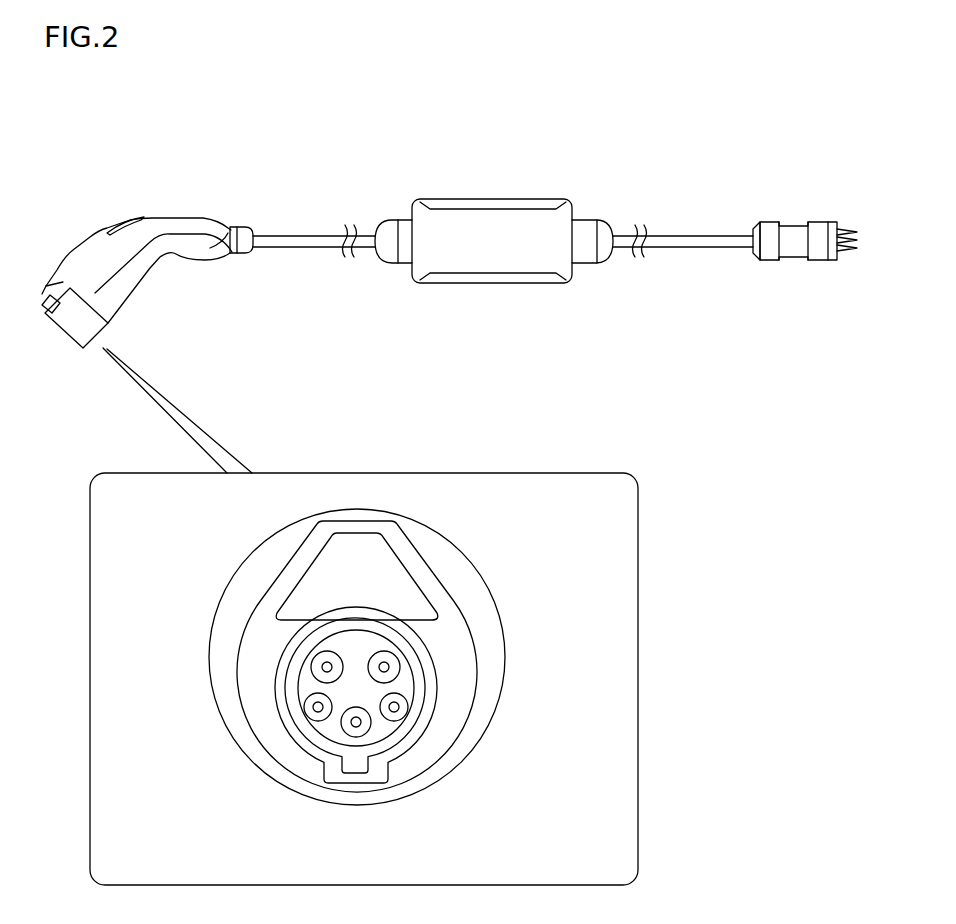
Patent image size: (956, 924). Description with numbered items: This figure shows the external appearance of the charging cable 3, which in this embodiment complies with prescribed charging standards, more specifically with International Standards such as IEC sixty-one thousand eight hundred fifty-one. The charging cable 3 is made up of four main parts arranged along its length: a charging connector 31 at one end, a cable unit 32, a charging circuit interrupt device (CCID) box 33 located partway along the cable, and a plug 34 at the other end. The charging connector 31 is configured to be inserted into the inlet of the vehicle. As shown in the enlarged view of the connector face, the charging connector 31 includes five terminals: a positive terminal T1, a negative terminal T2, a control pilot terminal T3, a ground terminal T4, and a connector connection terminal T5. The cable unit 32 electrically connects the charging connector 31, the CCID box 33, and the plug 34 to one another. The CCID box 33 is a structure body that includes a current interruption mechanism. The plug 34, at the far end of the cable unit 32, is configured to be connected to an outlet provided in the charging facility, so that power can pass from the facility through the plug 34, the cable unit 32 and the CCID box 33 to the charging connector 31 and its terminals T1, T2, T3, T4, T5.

The charging cable 3 is at (652, 120).
The charging connector 31 is at (187, 218).
The cable unit 32 is at (302, 233).
The charging circuit interrupt device (CCID) box 33 is at (497, 199).
The plug 34 is at (812, 222).
The positive terminal T1 is at (327, 667).
The negative terminal T2 is at (384, 667).
The control pilot terminal T3 is at (394, 707).
The ground terminal T4 is at (356, 722).
The connector connection terminal T5 is at (318, 707).